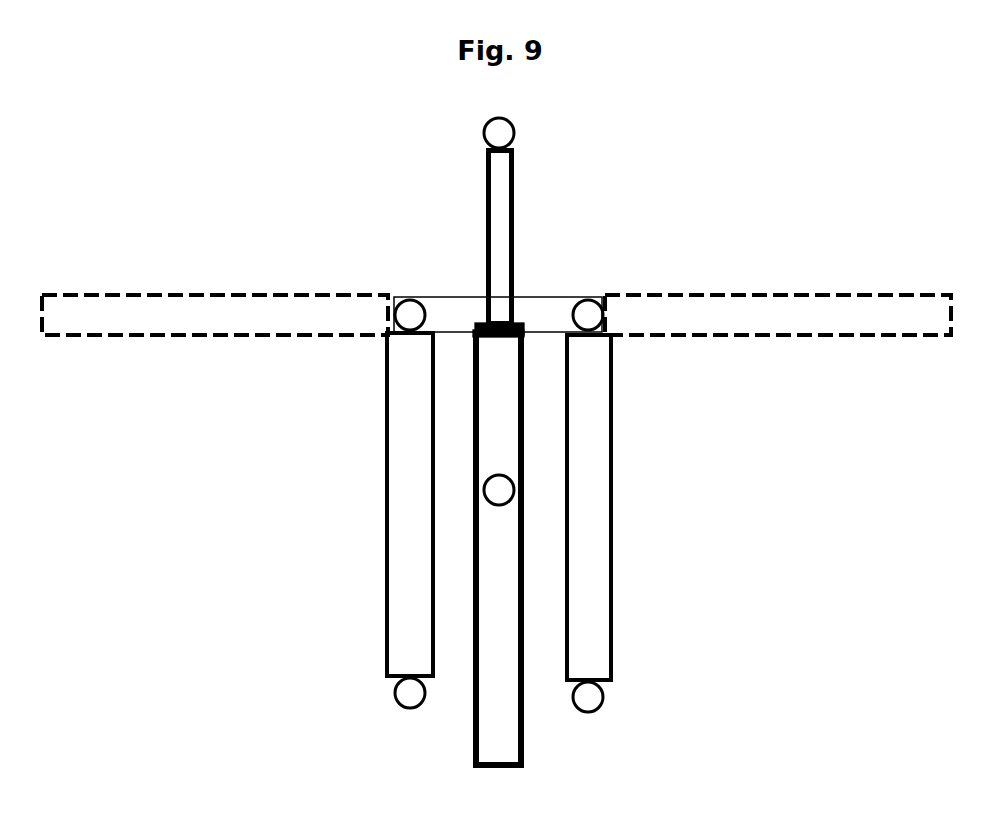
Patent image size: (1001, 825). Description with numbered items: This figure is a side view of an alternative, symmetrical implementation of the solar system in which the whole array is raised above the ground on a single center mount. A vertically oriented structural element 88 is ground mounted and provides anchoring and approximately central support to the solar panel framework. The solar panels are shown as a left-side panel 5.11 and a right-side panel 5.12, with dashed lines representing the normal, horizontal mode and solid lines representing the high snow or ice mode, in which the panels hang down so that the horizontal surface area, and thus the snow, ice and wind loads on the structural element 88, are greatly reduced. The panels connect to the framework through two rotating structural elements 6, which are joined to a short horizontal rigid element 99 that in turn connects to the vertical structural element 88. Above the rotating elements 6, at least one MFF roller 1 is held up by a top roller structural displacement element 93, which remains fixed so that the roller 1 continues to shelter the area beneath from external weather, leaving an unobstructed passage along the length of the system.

The MFF roller 1 is at (499, 415).
The rotating structural element 6 is at (499, 315).
The top roller structural displacement element 93 is at (487, 243).
The short horizontal rigid element 99 is at (498, 314).
The vertically oriented structural element 88 is at (498, 547).
The solar panel (left side) 5.11 is at (237, 485).
The solar panel (right side) 5.12 is at (759, 487).